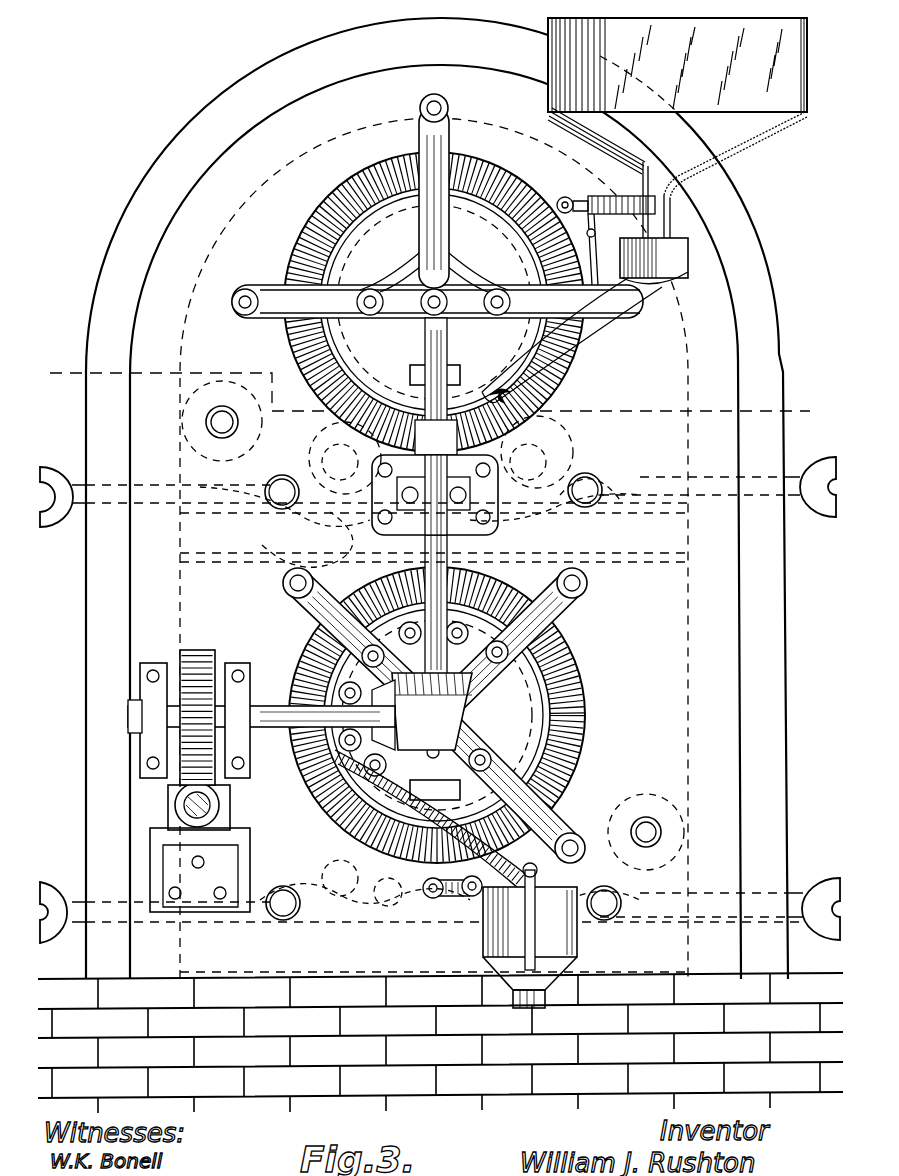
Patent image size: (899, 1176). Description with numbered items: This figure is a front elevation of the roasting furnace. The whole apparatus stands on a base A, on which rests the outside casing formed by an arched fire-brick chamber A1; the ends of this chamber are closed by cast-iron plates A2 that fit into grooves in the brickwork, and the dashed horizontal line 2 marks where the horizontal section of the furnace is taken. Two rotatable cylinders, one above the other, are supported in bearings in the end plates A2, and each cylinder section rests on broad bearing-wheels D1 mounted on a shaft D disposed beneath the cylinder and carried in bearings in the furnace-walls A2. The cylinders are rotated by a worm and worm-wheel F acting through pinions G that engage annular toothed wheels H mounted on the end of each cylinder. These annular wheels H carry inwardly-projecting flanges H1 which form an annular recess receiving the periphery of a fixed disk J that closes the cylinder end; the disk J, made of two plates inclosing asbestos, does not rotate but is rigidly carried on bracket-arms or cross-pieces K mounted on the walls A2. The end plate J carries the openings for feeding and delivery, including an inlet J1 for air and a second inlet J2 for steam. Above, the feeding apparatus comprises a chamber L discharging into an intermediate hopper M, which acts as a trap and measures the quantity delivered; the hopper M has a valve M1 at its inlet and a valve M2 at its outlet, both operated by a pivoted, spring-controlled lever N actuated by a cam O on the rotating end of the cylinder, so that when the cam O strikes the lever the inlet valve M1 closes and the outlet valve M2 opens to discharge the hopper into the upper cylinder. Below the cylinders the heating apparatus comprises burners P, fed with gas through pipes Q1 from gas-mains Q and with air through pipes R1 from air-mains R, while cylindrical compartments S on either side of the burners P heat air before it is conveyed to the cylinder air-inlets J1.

The base A is at (440, 1043).
The arched fire-brick chamber A1 is at (803, 720).
The cast-iron end plates A2 is at (703, 398).
The shaft D is at (325, 452).
The bearing-wheels D1 is at (545, 500).
The worm-wheel F is at (205, 652).
The pinions G is at (235, 790).
The annular toothed wheels H is at (300, 340).
The inwardly-projecting flanges H1 is at (565, 790).
The fixed disk J is at (560, 364).
The air inlet J1 is at (462, 372).
The steam inlet J2 is at (420, 758).
The bracket-arms K is at (372, 250).
The feed chamber L is at (775, 91).
The intermediate hopper M is at (738, 234).
The inlet valve M1 is at (700, 196).
The outlet valve M2 is at (655, 302).
The pivoted lever N is at (688, 268).
The cam O is at (548, 178).
The burners P is at (372, 512).
The gas-mains Q is at (285, 510).
The gas pipes Q1 is at (320, 940).
The air-mains R is at (826, 882).
The air pipes R1 is at (820, 952).
The air-heating chambers S is at (222, 438).
The section line 2 is at (437, 393).